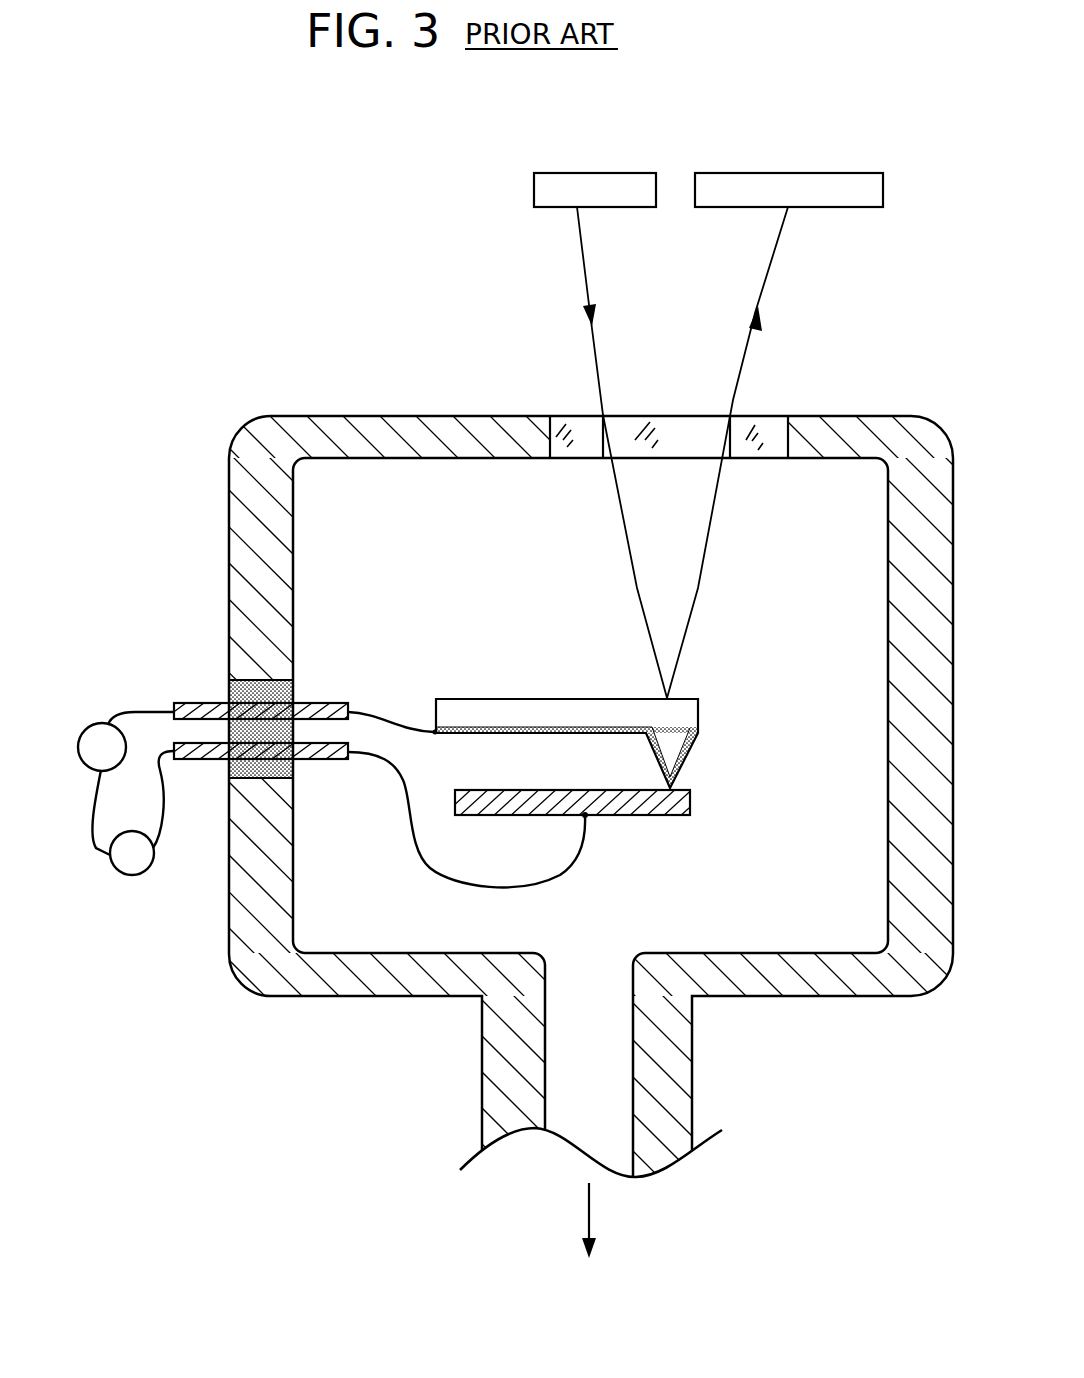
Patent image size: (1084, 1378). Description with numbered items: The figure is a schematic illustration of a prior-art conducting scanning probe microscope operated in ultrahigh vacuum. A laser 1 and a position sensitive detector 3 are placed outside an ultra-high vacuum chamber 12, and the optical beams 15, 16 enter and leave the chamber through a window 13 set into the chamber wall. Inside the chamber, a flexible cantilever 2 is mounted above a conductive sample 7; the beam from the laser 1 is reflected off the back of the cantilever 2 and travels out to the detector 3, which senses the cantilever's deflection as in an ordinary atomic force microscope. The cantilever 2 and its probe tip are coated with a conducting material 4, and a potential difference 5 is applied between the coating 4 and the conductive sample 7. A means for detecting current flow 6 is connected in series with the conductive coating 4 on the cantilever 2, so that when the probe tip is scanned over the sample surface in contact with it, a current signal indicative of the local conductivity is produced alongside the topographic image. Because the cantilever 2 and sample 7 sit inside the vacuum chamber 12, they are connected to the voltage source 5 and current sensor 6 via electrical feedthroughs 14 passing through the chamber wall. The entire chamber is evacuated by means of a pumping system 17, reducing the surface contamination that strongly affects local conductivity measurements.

The laser 1 is at (533, 190).
The flexible cantilever 2 is at (685, 706).
The position sensitive detector 3 is at (833, 172).
The conducting material 4 is at (687, 756).
The potential difference 5 is at (153, 868).
The means for detecting current flow 6 is at (95, 724).
The conductive sample 7 is at (652, 817).
The ultra-high vacuum chamber 12 is at (915, 831).
The window 13 is at (767, 422).
The electrical feedthroughs 14 is at (229, 692).
The optical beam 15 is at (637, 589).
The optical beam 16 is at (698, 589).
The pumping system 17 is at (597, 1225).